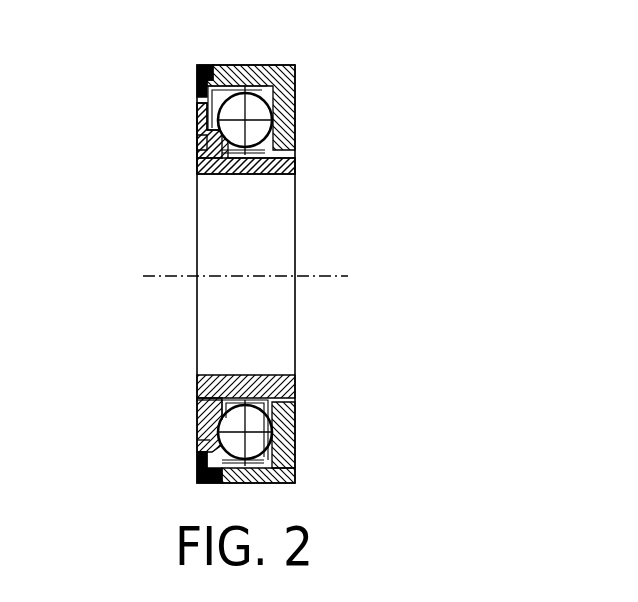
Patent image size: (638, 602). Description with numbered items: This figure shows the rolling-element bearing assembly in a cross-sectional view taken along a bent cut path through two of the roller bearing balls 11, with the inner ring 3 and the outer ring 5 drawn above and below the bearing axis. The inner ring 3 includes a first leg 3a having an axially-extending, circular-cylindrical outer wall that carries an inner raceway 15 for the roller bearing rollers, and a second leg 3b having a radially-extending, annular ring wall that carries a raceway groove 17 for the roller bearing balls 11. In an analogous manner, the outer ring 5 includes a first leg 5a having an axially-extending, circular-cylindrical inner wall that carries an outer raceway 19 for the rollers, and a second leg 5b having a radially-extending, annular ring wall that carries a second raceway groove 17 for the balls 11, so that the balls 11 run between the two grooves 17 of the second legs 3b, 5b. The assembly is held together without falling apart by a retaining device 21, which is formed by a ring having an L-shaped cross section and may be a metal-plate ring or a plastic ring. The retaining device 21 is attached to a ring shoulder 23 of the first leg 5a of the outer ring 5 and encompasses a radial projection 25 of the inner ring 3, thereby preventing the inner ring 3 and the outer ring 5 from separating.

The inner ring 3 is at (174, 186).
The first leg 3a is at (262, 168).
The second leg 3b is at (206, 150).
The outer ring 5 is at (310, 69).
The first leg 5a is at (260, 476).
The second leg 5b is at (280, 428).
The roller bearing balls 11 is at (263, 127).
The inner raceway 15 is at (208, 143).
The raceway groove 17 is at (212, 124).
The outer raceway 19 is at (210, 442).
The retaining device 21 is at (201, 482).
The ring shoulder 23 is at (205, 460).
The radial projection 25 is at (218, 402).